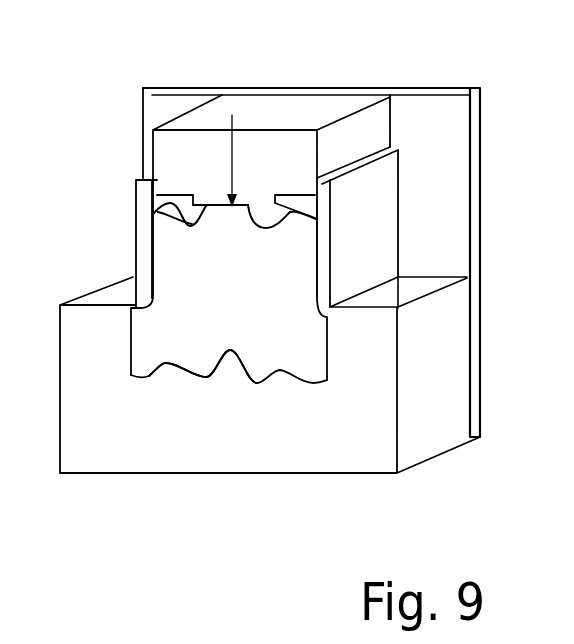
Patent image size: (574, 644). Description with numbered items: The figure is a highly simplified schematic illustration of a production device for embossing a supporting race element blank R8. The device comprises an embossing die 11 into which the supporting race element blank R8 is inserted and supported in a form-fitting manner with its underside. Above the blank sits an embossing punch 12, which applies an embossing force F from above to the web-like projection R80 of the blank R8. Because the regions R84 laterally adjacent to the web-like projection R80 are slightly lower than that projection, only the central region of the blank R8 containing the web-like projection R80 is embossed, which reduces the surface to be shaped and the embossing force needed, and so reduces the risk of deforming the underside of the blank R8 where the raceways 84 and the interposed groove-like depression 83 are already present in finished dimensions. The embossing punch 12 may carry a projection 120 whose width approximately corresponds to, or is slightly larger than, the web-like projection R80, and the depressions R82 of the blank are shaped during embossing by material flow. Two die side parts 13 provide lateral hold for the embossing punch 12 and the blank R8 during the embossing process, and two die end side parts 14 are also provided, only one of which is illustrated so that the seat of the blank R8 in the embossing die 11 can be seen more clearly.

The embossing die 11 is at (445, 357).
The embossing punch 12 is at (297, 108).
The die side parts 13 is at (145, 255).
The die end side parts 14 is at (433, 125).
The projection 120 is at (207, 200).
The supporting race element blank R8 is at (245, 300).
The web-like projection R80 is at (225, 215).
The depressions R82 is at (158, 210).
The regions laterally adjacent to the web-like projection R84 is at (165, 220).
The groove-like depression 83 is at (230, 352).
The raceways 84 is at (165, 365).